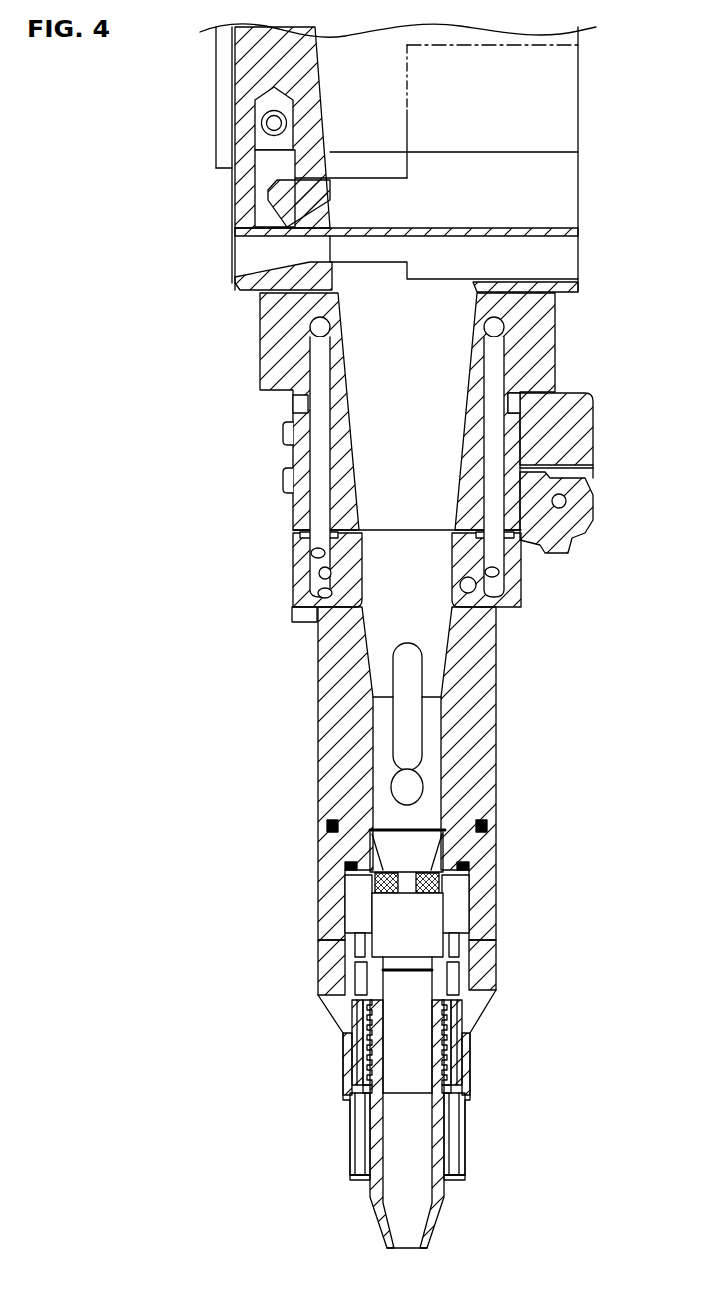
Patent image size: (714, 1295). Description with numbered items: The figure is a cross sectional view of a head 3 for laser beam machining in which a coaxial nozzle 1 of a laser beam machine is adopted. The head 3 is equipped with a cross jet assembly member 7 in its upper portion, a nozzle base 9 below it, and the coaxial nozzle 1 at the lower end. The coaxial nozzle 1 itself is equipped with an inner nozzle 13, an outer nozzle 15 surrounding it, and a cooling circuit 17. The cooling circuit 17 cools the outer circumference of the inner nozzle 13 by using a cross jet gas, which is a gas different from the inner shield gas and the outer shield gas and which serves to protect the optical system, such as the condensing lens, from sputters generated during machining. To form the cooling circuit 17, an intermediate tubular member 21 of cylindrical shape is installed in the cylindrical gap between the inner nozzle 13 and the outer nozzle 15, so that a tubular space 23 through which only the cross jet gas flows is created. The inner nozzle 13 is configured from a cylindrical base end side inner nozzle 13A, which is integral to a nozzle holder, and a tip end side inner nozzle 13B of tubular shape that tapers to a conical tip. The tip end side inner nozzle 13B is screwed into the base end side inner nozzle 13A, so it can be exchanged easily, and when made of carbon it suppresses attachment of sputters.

The coaxial nozzle 1 is at (482, 1124).
The head for a laser beam machining 3 is at (218, 572).
The cross jet assembly member 7 is at (213, 103).
The nozzle base 9 is at (318, 690).
The inner nozzle 13 is at (482, 1124).
The base end side inner nozzle 13A is at (440, 1090).
The tip end side inner nozzle 13B is at (447, 1150).
The outer nozzle 15 is at (497, 972).
The cooling circuit 17 is at (352, 1070).
The intermediate tubular member 21 is at (343, 1013).
The space 23 is at (353, 1037).